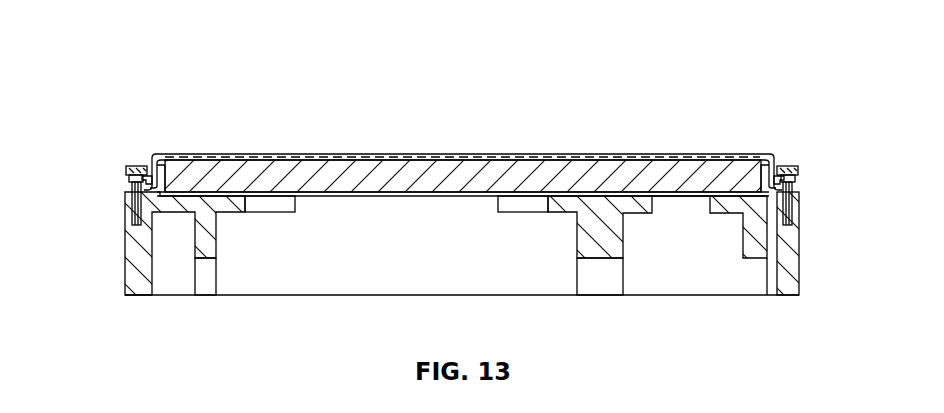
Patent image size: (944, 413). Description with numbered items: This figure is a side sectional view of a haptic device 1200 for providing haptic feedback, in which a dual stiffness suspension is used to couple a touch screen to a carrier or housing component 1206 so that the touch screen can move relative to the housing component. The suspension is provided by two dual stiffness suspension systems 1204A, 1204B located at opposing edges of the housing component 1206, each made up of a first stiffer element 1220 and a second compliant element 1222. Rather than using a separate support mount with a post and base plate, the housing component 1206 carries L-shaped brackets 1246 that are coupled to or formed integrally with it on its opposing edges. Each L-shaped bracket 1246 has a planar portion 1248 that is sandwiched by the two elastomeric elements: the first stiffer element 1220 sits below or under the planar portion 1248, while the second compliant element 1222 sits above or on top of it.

The haptic device 1200 is at (320, 116).
The dual stiffness suspension system 1204A is at (128, 153).
The dual stiffness suspension system 1204B is at (797, 153).
The carrier or housing component 1206 is at (227, 154).
The first stiffer element 1220 is at (127, 193).
The second compliant element 1222 is at (127, 167).
The L-shaped bracket 1246 is at (145, 153).
The planar portion 1248 is at (126, 182).